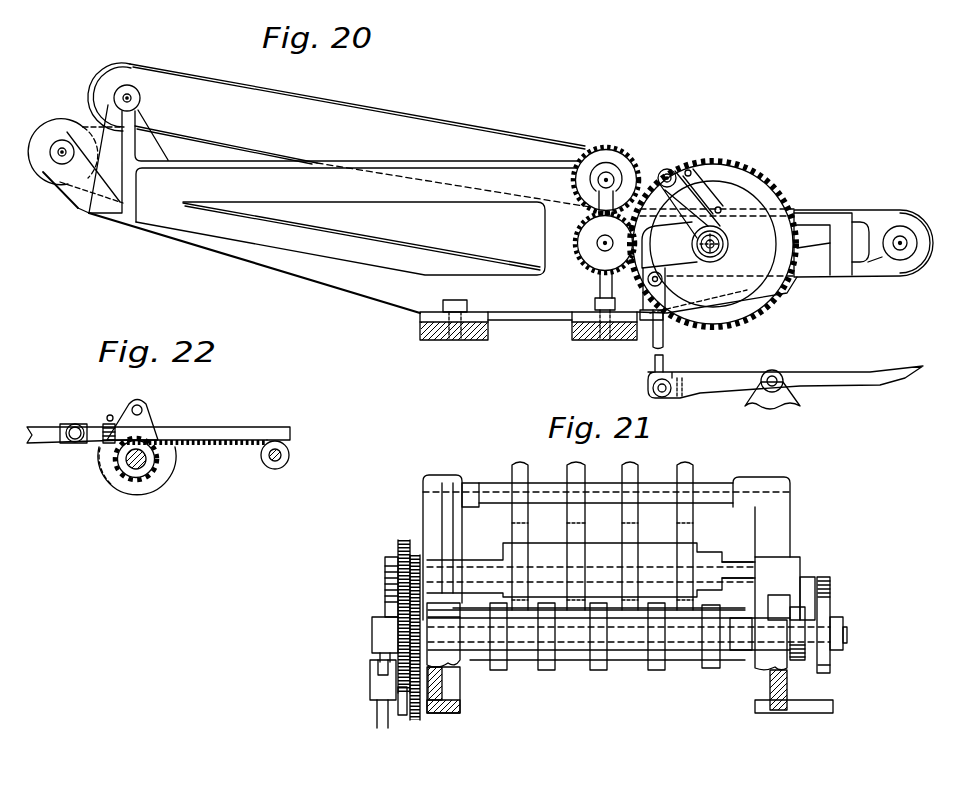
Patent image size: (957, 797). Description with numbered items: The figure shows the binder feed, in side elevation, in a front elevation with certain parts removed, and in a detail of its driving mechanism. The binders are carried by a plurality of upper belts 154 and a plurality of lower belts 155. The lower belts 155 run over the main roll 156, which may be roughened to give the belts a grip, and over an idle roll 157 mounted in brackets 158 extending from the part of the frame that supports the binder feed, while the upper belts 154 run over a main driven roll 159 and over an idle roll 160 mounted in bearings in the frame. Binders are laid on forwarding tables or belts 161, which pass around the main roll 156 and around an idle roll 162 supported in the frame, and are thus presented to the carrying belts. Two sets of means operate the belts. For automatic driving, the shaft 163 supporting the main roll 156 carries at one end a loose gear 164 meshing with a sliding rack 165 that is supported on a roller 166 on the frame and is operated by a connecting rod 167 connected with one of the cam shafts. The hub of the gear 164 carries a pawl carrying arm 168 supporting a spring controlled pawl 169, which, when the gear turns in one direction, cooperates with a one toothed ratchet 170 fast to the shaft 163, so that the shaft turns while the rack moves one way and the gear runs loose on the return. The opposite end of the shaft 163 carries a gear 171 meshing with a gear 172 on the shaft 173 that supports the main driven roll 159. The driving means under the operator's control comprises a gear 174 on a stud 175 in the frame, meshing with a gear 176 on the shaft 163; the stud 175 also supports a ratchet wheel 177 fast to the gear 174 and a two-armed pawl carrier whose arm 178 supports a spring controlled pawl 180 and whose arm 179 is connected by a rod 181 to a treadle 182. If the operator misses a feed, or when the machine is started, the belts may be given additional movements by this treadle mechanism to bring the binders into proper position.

In FIG. 20, the upper belts 154 is at (388, 114).
In FIG. 20, the lower belts 155 is at (378, 216).
In FIG. 21, the main roll 156 is at (697, 613).
In FIG. 20, the idle roll 157 is at (48, 168).
In FIG. 20, the brackets 158 is at (80, 201).
In FIG. 21, the main driven roll 159 is at (626, 566).
In FIG. 20, the idle roll 160 is at (155, 91).
In FIG. 20, the forwarding tables or belts 161 is at (845, 210).
In FIG. 20, the idle roll 162 is at (918, 277).
In FIG. 20, the shaft 163 is at (597, 238).
In FIG. 22, the shaft 163 is at (120, 478).
In FIG. 21, the shaft 163 is at (745, 657).
In FIG. 22, the gear 164 is at (160, 470).
In FIG. 21, the gear 164 is at (798, 662).
In FIG. 22, the sliding rack 165 is at (215, 431).
In FIG. 21, the sliding rack 165 is at (798, 608).
In FIG. 22, the roller 166 is at (271, 464).
In FIG. 21, the roller 166 is at (830, 646).
In FIG. 22, the connecting rod 167 is at (50, 441).
In FIG. 22, the pawl carrying arm 168 is at (150, 413).
In FIG. 21, the pawl carrying arm 168 is at (826, 607).
In FIG. 22, the spring controlled pawl 169 is at (105, 417).
In FIG. 21, the spring controlled pawl 169 is at (826, 590).
In FIG. 22, the one toothed ratchet 170 is at (105, 471).
In FIG. 21, the one toothed ratchet 170 is at (826, 673).
In FIG. 20, the gear 171 is at (575, 246).
In FIG. 21, the gear 171 is at (380, 657).
In FIG. 20, the gear 172 is at (638, 168).
In FIG. 21, the gear 172 is at (402, 541).
In FIG. 20, the shaft 173 is at (608, 165).
In FIG. 21, the shaft 173 is at (730, 565).
In FIG. 20, the gear 174 is at (747, 317).
In FIG. 21, the gear 174 is at (418, 715).
In FIG. 20, the stud 175 is at (722, 250).
In FIG. 21, the stud 175 is at (373, 630).
In FIG. 20, the gear 176 is at (584, 258).
In FIG. 20, the ratchet wheel 177 is at (729, 244).
In FIG. 21, the ratchet wheel 177 is at (403, 716).
In FIG. 20, the pawl carrier arm 178 is at (689, 203).
In FIG. 21, the pawl carrier arm 178 is at (385, 606).
In FIG. 20, the pawl carrier arm 179 is at (668, 271).
In FIG. 20, the spring controlled pawl 180 is at (684, 169).
In FIG. 20, the rod 181 is at (652, 340).
In FIG. 21, the rod 181 is at (378, 720).
In FIG. 20, the treadle 182 is at (785, 387).